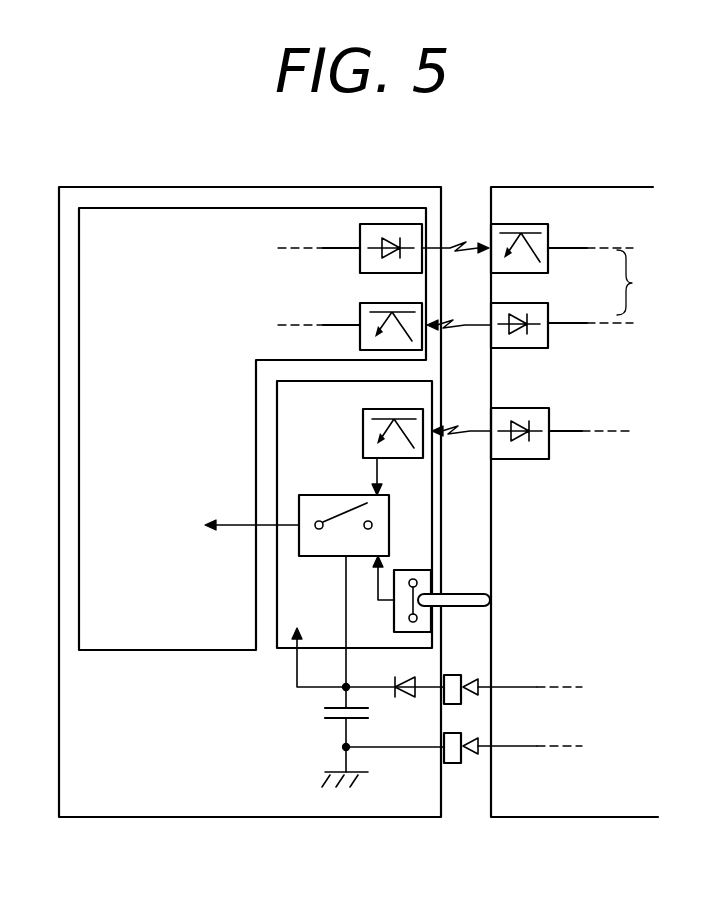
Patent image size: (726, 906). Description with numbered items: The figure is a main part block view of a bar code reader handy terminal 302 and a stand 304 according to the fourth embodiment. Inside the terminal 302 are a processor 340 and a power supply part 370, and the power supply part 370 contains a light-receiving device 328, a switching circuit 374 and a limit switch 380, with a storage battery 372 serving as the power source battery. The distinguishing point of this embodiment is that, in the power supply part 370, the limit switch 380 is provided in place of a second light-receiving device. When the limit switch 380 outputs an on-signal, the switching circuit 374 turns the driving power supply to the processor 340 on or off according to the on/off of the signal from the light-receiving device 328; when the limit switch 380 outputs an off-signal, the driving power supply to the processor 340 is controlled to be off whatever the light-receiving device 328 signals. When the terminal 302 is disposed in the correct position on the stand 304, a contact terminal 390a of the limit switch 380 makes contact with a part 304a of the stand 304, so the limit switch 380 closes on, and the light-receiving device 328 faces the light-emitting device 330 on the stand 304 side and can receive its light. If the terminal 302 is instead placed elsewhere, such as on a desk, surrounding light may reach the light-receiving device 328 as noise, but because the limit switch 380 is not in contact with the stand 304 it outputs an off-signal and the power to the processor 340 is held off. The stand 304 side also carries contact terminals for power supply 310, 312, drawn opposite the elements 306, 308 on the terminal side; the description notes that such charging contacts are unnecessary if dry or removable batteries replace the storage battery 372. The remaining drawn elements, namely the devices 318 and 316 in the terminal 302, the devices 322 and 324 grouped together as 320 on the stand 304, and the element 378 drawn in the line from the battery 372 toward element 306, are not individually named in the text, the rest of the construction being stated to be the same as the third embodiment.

The bar code reader handy terminal 302 is at (213, 187).
The processor 340 is at (294, 208).
The stand 304 is at (568, 187).
The light emitting element 318 is at (393, 224).
The light receiving element 316 is at (360, 316).
The light receiving element 324 is at (549, 255).
The light emitting element 322 is at (549, 313).
The communication element pair 320 is at (646, 282).
The light-emitting device 330 is at (549, 419).
The power supply part 370 is at (432, 512).
The light-receiving device 328 is at (363, 420).
The switching circuit 374 is at (328, 495).
The limit switch 380 is at (397, 606).
The part of the stand 304a is at (490, 600).
The contact terminal of the limit switch 390a is at (480, 594).
The storage battery 372 is at (326, 708).
The diode 378 is at (405, 697).
The contact terminal 306 is at (453, 675).
The contact terminal for power supply 310 is at (490, 687).
The contact terminal 308 is at (453, 763).
The contact terminal for power supply 312 is at (490, 747).